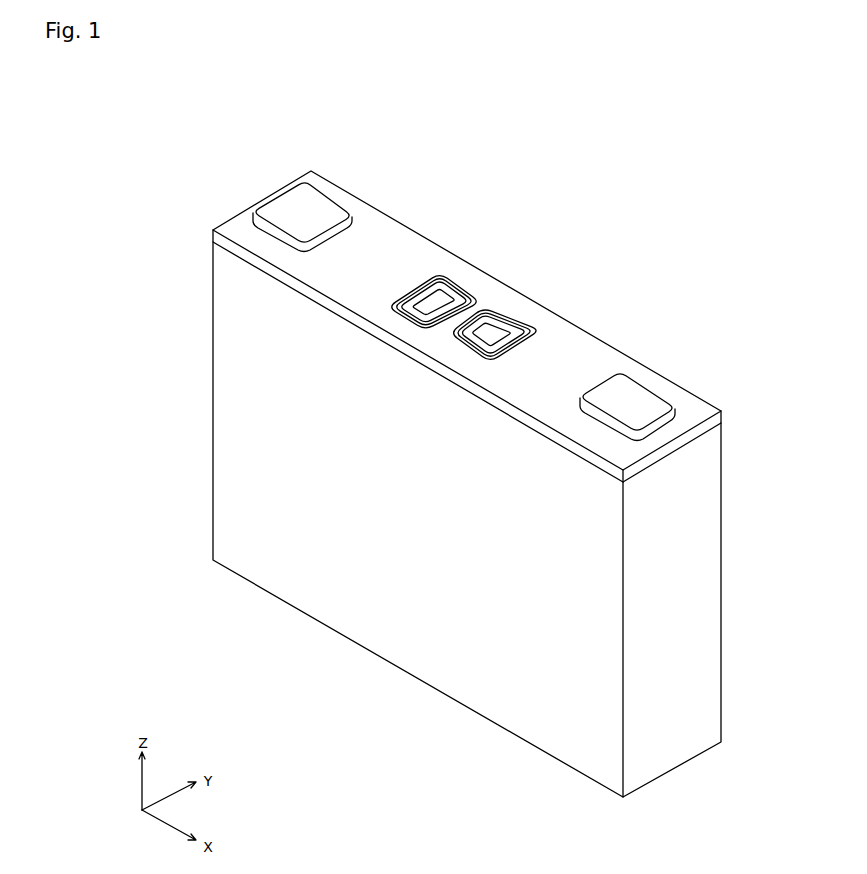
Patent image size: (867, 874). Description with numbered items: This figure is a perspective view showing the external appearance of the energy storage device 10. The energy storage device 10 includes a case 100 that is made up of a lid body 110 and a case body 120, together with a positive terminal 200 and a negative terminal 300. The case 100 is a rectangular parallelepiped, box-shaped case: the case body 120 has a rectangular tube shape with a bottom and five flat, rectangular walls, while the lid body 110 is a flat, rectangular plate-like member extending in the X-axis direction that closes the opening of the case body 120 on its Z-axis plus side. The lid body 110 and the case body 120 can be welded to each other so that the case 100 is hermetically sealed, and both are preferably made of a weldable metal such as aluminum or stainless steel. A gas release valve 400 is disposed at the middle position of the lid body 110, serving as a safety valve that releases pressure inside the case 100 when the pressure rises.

The energy storage device 10 is at (613, 180).
The case 100 is at (148, 330).
The lid body 110 is at (347, 288).
The case body 120 is at (250, 402).
The positive terminal 200 is at (310, 212).
The negative terminal 300 is at (635, 395).
The gas release valve 400 is at (465, 287).